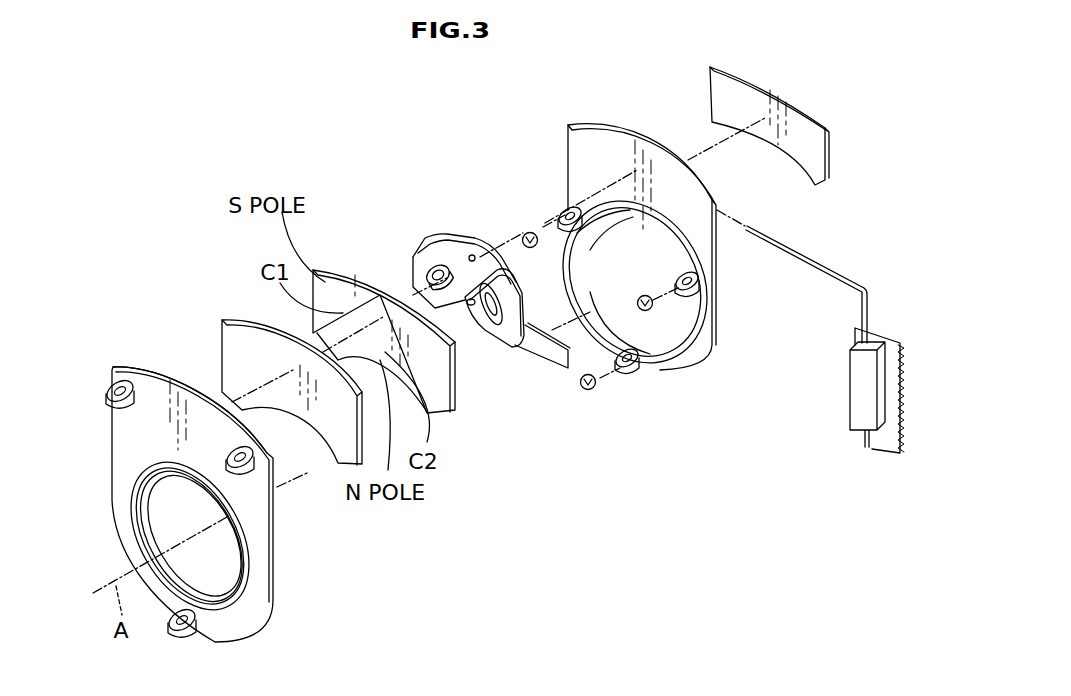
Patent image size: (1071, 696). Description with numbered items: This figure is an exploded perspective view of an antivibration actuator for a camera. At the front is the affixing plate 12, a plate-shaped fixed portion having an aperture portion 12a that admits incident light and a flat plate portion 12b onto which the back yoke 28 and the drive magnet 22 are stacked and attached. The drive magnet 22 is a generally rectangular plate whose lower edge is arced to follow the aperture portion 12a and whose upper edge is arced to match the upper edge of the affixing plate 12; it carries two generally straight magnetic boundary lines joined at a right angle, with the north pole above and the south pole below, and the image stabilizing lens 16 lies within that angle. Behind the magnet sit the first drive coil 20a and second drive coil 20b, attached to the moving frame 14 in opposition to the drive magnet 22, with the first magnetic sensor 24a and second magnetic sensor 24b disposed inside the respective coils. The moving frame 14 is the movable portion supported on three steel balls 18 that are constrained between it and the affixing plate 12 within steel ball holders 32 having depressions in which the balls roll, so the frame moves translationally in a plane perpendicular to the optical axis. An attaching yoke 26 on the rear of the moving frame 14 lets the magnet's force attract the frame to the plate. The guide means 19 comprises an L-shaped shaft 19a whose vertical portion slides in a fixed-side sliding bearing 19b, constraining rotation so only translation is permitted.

The affixing plate 12 is at (106, 429).
The aperture portion 12a is at (145, 542).
The flat plate portion 12b is at (165, 365).
The moving frame 14 is at (585, 124).
The image stabilizing lens 16 is at (617, 282).
The steel balls 18 is at (526, 234).
The guide means 19 is at (825, 304).
The L-shaped shaft 19a is at (828, 270).
The fixed-side sliding bearing 19b is at (858, 400).
The first drive coil 20a is at (428, 257).
The second drive coil 20b is at (505, 337).
The drive magnet 22 is at (340, 285).
The first magnetic sensor 24a is at (430, 257).
The second magnetic sensor 24b is at (477, 318).
The attaching yoke 26 is at (805, 130).
The back yoke 28 is at (235, 353).
The steel ball holder 32 is at (568, 211).